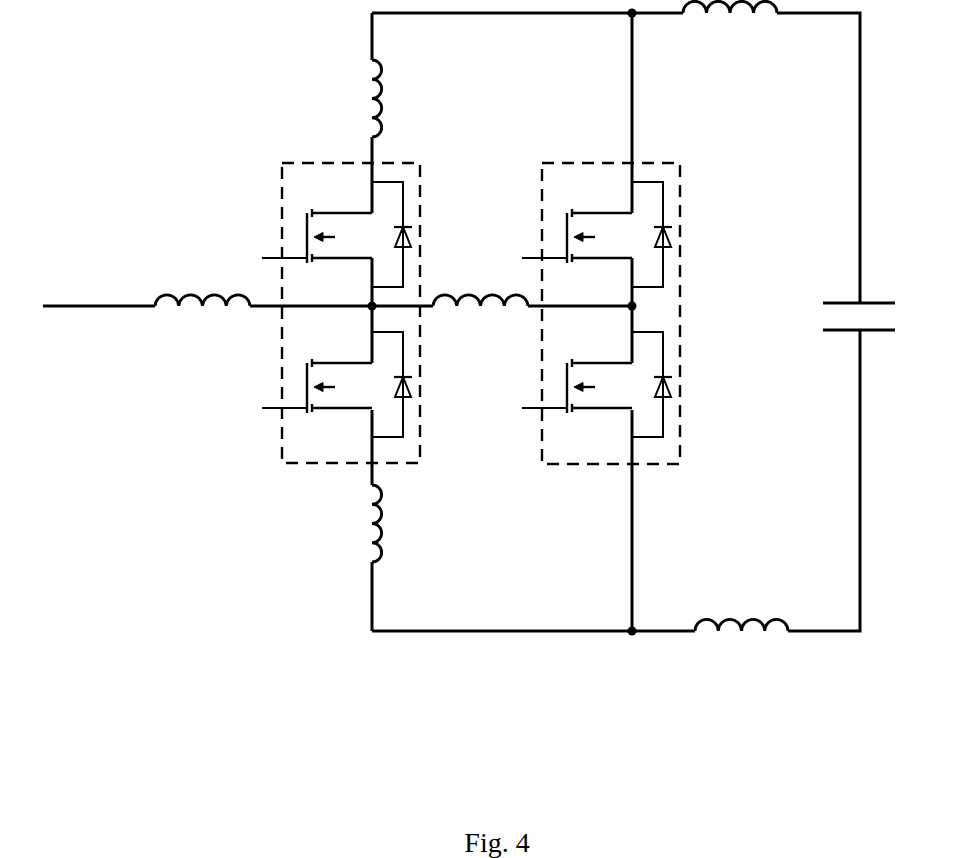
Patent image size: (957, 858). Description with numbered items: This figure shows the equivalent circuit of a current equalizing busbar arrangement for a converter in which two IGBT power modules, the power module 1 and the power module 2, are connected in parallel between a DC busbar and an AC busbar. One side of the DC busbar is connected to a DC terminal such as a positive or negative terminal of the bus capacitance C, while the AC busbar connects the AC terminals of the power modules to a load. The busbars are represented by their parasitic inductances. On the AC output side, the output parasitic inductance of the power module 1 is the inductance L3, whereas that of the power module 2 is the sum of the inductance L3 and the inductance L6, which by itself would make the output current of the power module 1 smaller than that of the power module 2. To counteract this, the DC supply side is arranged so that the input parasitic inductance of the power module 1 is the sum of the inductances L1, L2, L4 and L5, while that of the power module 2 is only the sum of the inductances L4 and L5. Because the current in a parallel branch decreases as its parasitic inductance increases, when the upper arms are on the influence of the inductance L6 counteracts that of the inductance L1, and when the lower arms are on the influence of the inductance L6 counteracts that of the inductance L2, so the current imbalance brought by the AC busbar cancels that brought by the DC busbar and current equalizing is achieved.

The power module 1 is at (282, 200).
The power module 2 is at (541, 200).
The parasitic inductance L1 is at (337, 98).
The parasitic inductance L2 is at (352, 523).
The output parasitic inductance L3 is at (202, 280).
The parasitic inductance L4 is at (730, 26).
The parasitic inductance L5 is at (741, 605).
The parasitic inductance L6 is at (480, 282).
The bus capacitance C is at (842, 319).